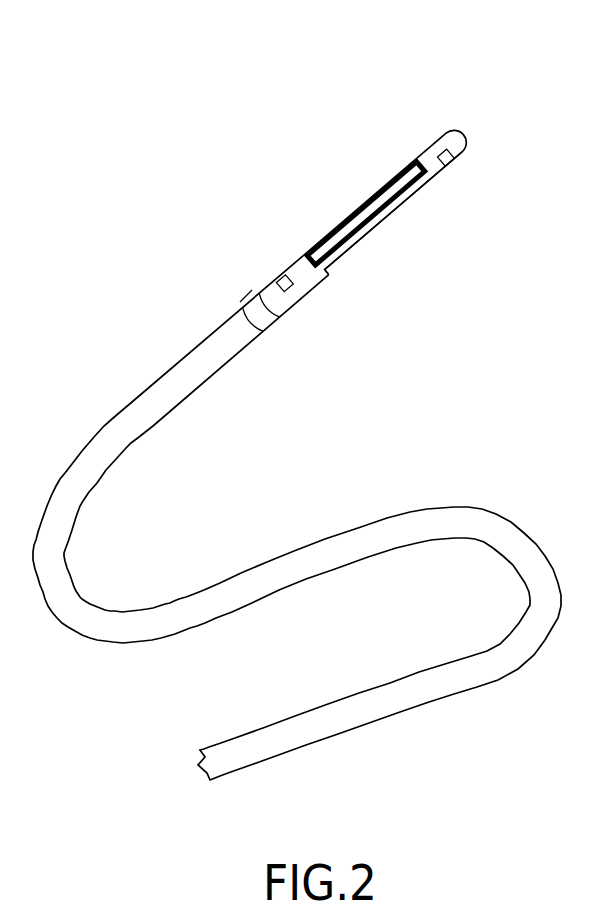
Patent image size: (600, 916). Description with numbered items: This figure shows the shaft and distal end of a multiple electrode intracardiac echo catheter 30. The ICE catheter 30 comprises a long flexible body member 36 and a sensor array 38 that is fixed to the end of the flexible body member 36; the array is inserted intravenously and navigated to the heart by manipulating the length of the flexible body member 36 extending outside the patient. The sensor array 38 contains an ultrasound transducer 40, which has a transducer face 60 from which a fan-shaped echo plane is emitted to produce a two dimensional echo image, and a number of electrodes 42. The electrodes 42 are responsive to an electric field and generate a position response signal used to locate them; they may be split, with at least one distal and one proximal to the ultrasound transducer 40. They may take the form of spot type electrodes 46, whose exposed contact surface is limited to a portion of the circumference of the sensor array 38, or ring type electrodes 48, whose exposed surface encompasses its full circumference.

The intracardiac echo catheter 30 is at (291, 399).
The flexible body member 36 is at (291, 490).
The sensor array 38 is at (356, 214).
The ultrasound transducer 40 is at (385, 218).
The electrodes 42 is at (243, 293).
The spot type electrodes 46 is at (283, 276).
The ring type electrodes 48 is at (275, 332).
The transducer face 60 is at (364, 206).